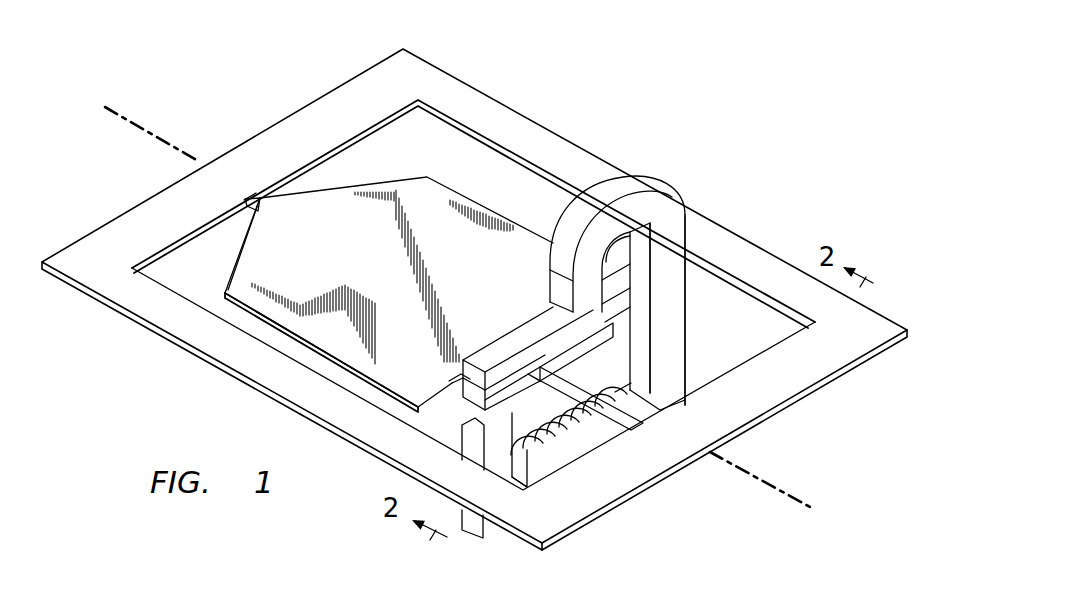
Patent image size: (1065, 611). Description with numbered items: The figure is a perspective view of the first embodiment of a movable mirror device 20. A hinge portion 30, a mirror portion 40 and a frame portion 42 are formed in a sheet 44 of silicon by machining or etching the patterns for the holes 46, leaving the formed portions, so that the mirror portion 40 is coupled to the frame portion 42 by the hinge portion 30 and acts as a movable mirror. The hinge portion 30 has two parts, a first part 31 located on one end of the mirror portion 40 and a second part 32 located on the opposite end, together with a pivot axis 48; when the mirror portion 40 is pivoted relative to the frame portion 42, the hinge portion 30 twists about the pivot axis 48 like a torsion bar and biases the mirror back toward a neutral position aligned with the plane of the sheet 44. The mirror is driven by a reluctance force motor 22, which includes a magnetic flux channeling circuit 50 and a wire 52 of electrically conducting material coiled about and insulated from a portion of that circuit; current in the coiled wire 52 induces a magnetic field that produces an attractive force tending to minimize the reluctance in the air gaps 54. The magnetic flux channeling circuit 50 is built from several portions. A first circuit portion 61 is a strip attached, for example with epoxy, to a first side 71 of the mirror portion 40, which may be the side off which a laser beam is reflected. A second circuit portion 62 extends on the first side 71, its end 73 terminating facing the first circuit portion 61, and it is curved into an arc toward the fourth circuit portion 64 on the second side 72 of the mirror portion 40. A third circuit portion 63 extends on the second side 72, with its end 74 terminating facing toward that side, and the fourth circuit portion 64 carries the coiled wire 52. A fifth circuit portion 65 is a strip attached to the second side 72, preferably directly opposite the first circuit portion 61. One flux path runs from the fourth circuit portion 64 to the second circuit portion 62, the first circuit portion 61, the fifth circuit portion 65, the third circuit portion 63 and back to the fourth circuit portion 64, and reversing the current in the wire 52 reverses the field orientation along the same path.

The switch assembly 20 is at (570, 84).
The reluctance force motor 22 is at (675, 176).
The hinge portion 30 is at (255, 185).
The first part of the hinge portion 31 is at (628, 398).
The second part of the hinge portion 32 is at (268, 205).
The mirror portion 40 is at (275, 270).
The frame portion 42 is at (810, 371).
The sheet 44 is at (96, 306).
The holes 46 is at (442, 112).
The pivot axis 48 is at (152, 132).
The magnetic flux channeling circuit 50 is at (692, 330).
The wire 52 is at (588, 450).
The air gaps 54 is at (540, 302).
The first circuit portion 61 is at (510, 345).
The second circuit portion 62 is at (630, 212).
The third circuit portion 63 is at (548, 470).
The fourth circuit portion 64 is at (533, 482).
The fifth circuit portion 65 is at (447, 384).
The first side of the mirror portion 71 is at (437, 188).
The second side of the mirror portion 72 is at (245, 241).
The end of the second circuit portion 73 is at (618, 310).
The end of the third circuit portion 74 is at (472, 440).